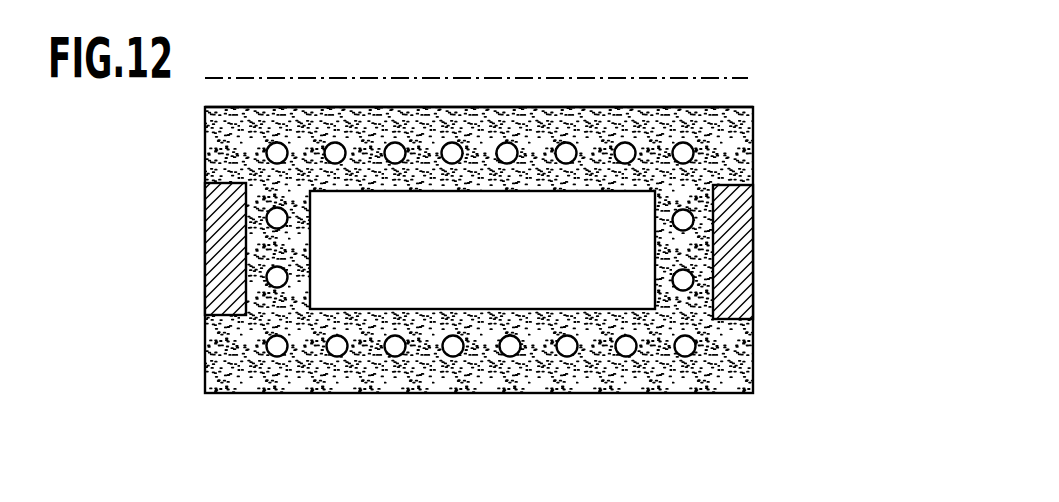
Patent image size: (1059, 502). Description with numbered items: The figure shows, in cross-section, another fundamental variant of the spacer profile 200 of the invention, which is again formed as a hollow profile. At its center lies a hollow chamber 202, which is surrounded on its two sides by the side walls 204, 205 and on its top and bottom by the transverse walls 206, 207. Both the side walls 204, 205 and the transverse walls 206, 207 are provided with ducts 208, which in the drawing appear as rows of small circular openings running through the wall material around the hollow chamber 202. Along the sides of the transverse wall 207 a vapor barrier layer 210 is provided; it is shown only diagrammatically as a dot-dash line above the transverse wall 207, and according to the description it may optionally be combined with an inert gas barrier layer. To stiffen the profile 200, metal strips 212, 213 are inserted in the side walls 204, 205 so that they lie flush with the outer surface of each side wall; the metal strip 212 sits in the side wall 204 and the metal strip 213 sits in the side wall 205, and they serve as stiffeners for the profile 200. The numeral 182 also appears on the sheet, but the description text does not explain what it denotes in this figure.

The engine 182 is at (467, 16).
The spacer profile 200 is at (785, 82).
The hollow chamber 202 is at (479, 259).
The side wall 204 is at (172, 158).
The side wall 205 is at (787, 156).
The transverse wall 206 is at (385, 415).
The transverse wall 207 is at (711, 78).
The ducts 208 is at (626, 357).
The vapor barrier layer 210 is at (588, 79).
The metal strip 212 is at (225, 241).
The metal strip 213 is at (738, 262).